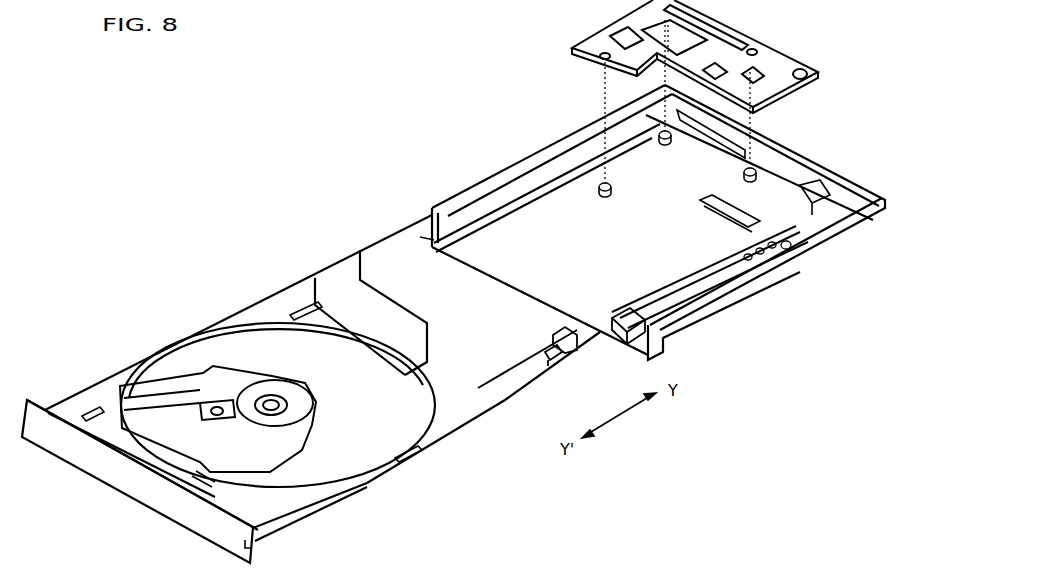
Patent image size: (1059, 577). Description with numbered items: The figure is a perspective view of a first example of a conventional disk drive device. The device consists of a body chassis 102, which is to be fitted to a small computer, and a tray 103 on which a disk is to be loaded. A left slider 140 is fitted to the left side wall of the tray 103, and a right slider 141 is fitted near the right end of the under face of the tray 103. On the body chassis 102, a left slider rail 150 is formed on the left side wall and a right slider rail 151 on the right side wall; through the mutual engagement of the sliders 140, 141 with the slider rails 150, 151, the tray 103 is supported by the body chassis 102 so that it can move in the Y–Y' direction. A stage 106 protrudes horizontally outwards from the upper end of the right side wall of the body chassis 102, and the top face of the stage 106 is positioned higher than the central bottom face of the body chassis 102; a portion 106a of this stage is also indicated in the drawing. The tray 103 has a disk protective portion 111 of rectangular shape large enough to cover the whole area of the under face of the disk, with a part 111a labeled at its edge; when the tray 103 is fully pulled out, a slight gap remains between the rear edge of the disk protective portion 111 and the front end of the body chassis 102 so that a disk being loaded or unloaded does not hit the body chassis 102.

The body chassis 102 is at (800, 160).
The tray 103 is at (433, 446).
The stage 106 is at (693, 285).
The rail bracket 106a is at (645, 348).
The disk protective portion 111 is at (455, 403).
The tray corner portion 111a is at (508, 402).
The left slider 140 is at (360, 253).
The right slider 141 is at (550, 358).
The left slider rail 150 is at (556, 150).
The right slider rail 151 is at (620, 314).